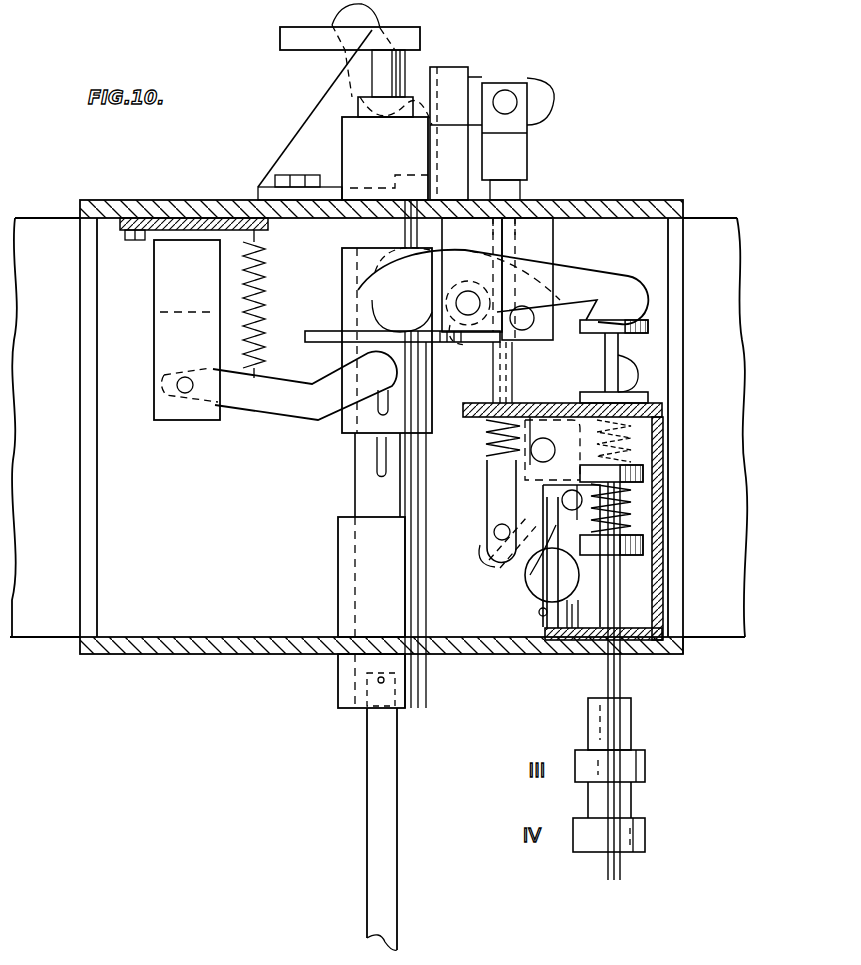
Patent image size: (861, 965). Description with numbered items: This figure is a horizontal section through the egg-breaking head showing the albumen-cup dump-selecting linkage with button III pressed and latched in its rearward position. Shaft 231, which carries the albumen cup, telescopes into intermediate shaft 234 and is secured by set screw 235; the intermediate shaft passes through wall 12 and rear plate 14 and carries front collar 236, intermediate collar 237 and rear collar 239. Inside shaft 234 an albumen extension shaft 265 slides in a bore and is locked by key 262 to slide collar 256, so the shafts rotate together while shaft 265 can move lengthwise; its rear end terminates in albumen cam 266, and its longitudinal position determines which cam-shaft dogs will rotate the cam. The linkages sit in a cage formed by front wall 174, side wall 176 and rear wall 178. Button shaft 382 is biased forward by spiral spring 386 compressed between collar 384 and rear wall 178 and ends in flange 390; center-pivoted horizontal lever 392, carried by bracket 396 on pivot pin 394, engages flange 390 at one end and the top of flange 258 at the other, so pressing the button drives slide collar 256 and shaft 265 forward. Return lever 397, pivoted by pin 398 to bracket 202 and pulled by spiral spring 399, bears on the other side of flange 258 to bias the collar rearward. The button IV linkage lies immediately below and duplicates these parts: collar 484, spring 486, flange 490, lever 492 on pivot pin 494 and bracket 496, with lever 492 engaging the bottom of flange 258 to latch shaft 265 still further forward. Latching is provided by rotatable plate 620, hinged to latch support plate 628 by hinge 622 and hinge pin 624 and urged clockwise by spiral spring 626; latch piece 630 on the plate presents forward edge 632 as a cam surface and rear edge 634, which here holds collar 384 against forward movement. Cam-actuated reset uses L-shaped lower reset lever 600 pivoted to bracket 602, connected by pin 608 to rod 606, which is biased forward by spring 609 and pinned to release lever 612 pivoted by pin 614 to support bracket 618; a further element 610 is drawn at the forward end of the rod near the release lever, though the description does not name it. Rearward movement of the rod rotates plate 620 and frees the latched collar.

The wall 12 is at (222, 654).
The rear plate 14 is at (150, 200).
The front wall 174 is at (678, 655).
The side wall 176 is at (663, 608).
The rear wall 178 is at (566, 403).
The bracket 202 is at (164, 305).
The shaft 231 is at (397, 918).
The intermediate shaft 234 is at (355, 483).
The set screw 235 is at (378, 684).
The front collar 236 is at (338, 693).
The intermediate collar 237 is at (338, 544).
The rear collar 239 is at (342, 140).
The slide collar 256 is at (342, 307).
The flange 258 is at (320, 343).
The key 262 is at (383, 404).
The albumen extension shaft 265 is at (410, 58).
The albumen cam 266 is at (420, 24).
The button shaft 382 is at (645, 583).
The collar 384 is at (645, 474).
The spiral spring 386 is at (636, 440).
The flange 390 is at (650, 327).
The center-pivoted horizontal lever 392 is at (595, 270).
The pivot pin 394 is at (472, 320).
The bracket 396 is at (466, 318).
The return lever 397 is at (263, 402).
The pin 398 is at (177, 386).
The spiral spring 399 is at (270, 268).
The collar 484 is at (645, 545).
The spring 486 is at (635, 521).
The flange 490 is at (650, 399).
The center-pivoted horizontal lever 492 is at (635, 372).
The pivot pin 494 is at (522, 331).
The bracket 496 is at (555, 241).
The lower reset lever 600 is at (358, 75).
The bracket 602 is at (290, 147).
The rod 606 is at (520, 195).
The pin 608 is at (520, 100).
The spring 609 is at (480, 440).
The pin 610 is at (493, 541).
The release lever 612 is at (490, 553).
The pin 614 is at (556, 451).
The support bracket 618 is at (532, 380).
The rotatable plate 620 is at (565, 560).
The hinge 622 is at (530, 585).
The hinge pin 624 is at (573, 640).
The spiral spring 626 is at (532, 620).
The latch support plate 628 is at (547, 625).
The latch piece 630 is at (488, 522).
The forward edge 632 is at (585, 513).
The rear edge 634 is at (543, 487).